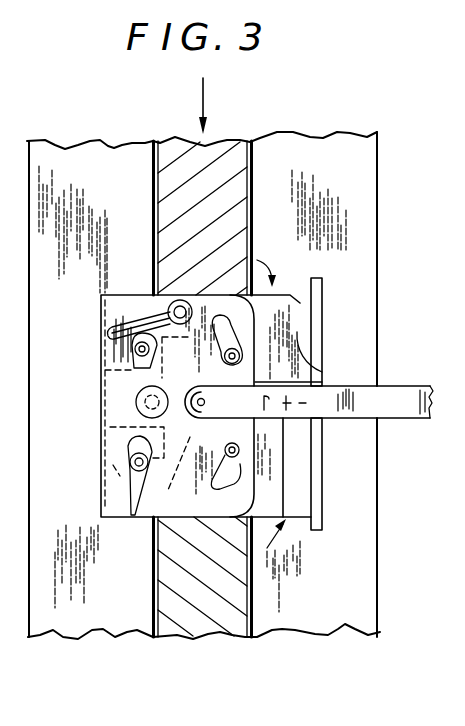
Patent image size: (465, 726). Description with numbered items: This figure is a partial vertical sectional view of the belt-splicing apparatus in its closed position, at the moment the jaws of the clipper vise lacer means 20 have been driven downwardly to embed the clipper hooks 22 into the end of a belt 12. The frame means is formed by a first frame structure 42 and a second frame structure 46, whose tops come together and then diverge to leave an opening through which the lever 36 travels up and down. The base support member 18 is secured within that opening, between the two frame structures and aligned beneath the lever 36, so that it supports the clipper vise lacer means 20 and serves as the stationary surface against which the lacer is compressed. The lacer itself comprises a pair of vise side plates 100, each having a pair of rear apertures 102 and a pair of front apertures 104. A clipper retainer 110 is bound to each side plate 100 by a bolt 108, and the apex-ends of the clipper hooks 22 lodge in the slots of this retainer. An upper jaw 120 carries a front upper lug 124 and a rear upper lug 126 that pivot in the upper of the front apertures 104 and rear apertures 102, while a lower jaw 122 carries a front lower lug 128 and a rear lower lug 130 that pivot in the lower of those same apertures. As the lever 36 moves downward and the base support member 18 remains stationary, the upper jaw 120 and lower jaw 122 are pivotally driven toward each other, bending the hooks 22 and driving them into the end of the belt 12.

The belt 12 is at (402, 402).
The base support member 18 is at (233, 580).
The clipper vise lacer means 20 is at (324, 358).
The clipper hooks 22 is at (309, 402).
The lever 36 is at (200, 181).
The first frame structure 42 is at (93, 181).
The second frame structure 46 is at (343, 180).
The vise side plates 100 is at (198, 518).
The rear apertures 102 is at (136, 352).
The front apertures 104 is at (229, 321).
The bolt 108 is at (137, 395).
The clipper retainer 110 is at (148, 405).
The upper jaw 120 is at (323, 378).
The lower jaw 122 is at (242, 483).
The front upper lug 124 is at (330, 388).
The rear upper lug 126 is at (128, 347).
The front lower lug 128 is at (297, 466).
The rear lower lug 130 is at (133, 505).